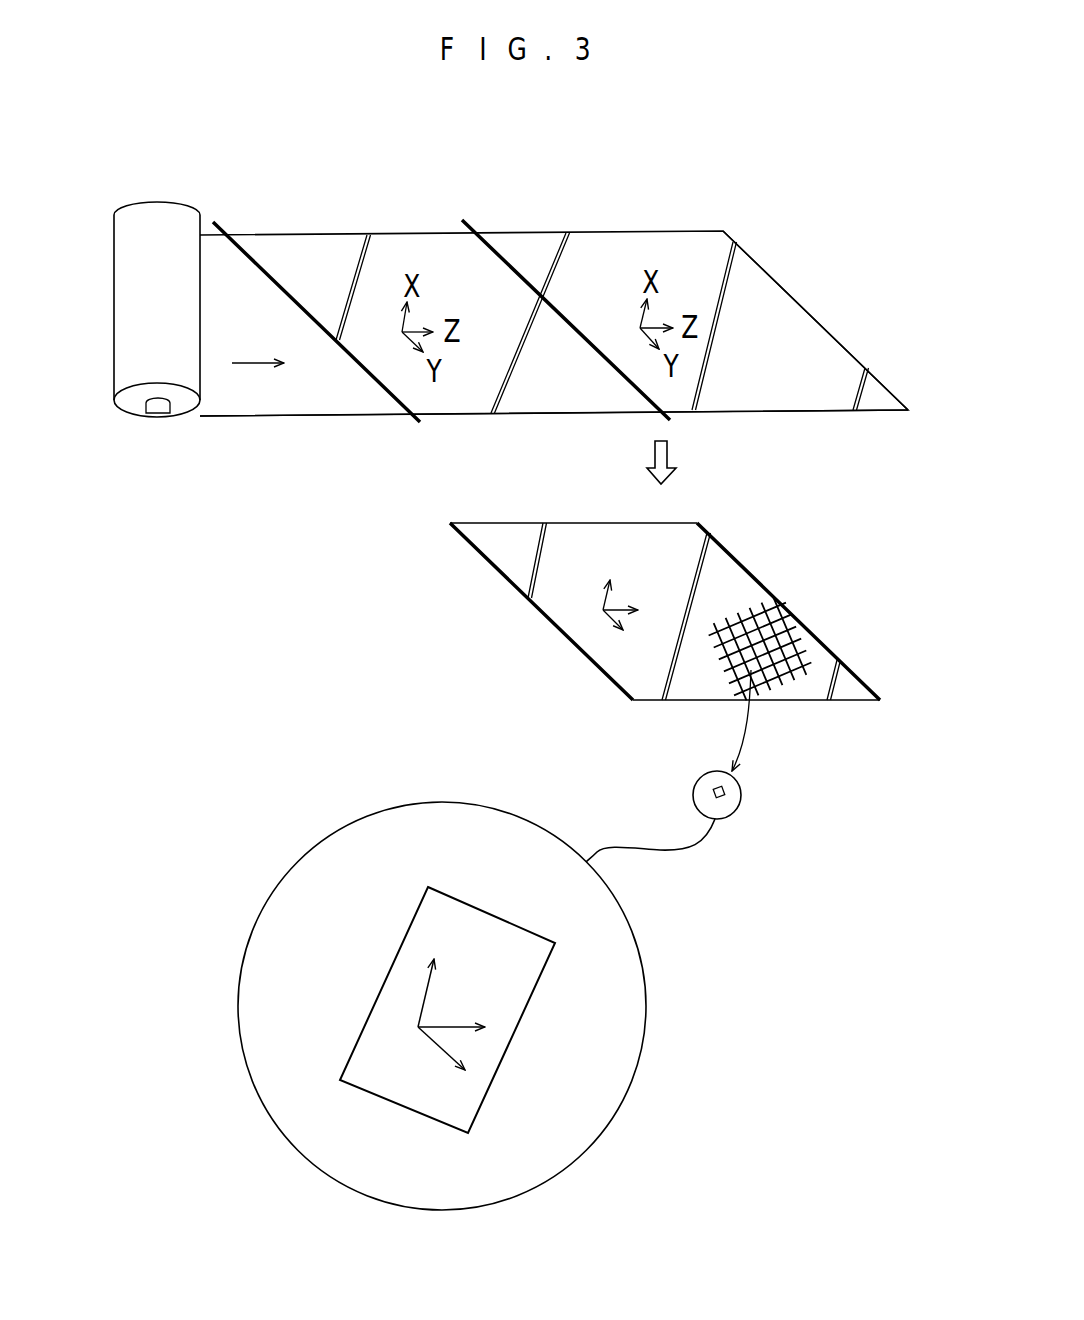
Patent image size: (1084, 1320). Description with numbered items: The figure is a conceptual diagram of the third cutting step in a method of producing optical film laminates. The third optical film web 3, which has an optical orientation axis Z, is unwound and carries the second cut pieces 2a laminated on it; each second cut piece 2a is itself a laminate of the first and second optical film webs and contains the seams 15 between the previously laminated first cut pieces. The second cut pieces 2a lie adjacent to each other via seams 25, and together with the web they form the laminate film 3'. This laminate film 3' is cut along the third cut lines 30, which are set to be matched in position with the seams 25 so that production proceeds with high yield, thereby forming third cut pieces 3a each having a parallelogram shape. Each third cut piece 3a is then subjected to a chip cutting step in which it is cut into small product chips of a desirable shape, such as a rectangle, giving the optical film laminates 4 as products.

The third optical film web 3 is at (511, 343).
The laminate film 3' is at (811, 268).
The third cut pieces 3a is at (665, 629).
The second cut pieces 2a is at (554, 433).
The seams 15 is at (687, 433).
The seams 25 is at (411, 325).
The third cut lines 30 is at (441, 295).
The optical film laminates 4 is at (526, 902).